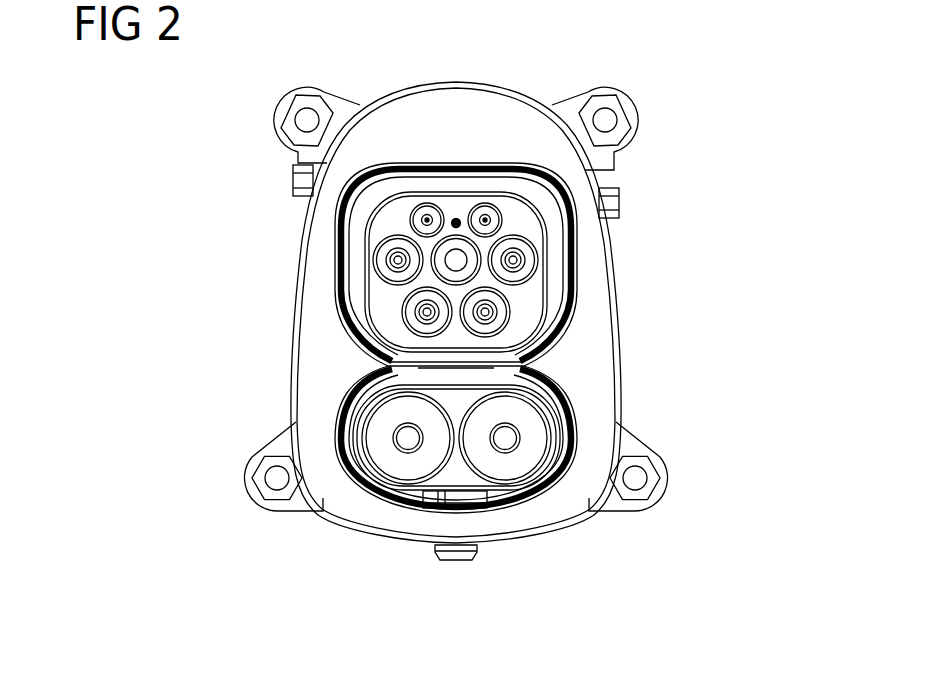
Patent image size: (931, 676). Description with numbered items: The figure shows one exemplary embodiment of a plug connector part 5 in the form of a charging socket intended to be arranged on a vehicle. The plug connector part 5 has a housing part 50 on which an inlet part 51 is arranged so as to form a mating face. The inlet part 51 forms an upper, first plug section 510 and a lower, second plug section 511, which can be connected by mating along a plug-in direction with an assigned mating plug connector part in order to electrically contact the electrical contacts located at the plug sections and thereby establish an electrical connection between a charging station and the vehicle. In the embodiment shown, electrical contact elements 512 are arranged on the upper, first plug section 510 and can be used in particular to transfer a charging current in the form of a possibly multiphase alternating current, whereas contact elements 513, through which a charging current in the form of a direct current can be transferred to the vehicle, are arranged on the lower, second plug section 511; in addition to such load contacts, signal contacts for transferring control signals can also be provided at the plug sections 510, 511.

The plug connector part 5 is at (645, 166).
The housing part 50 is at (598, 338).
The inlet part 51 is at (573, 288).
The first plug section 510 is at (549, 256).
The second plug section 511 is at (532, 485).
The electrical contact elements 512 is at (424, 313).
The contact elements 513 is at (505, 440).